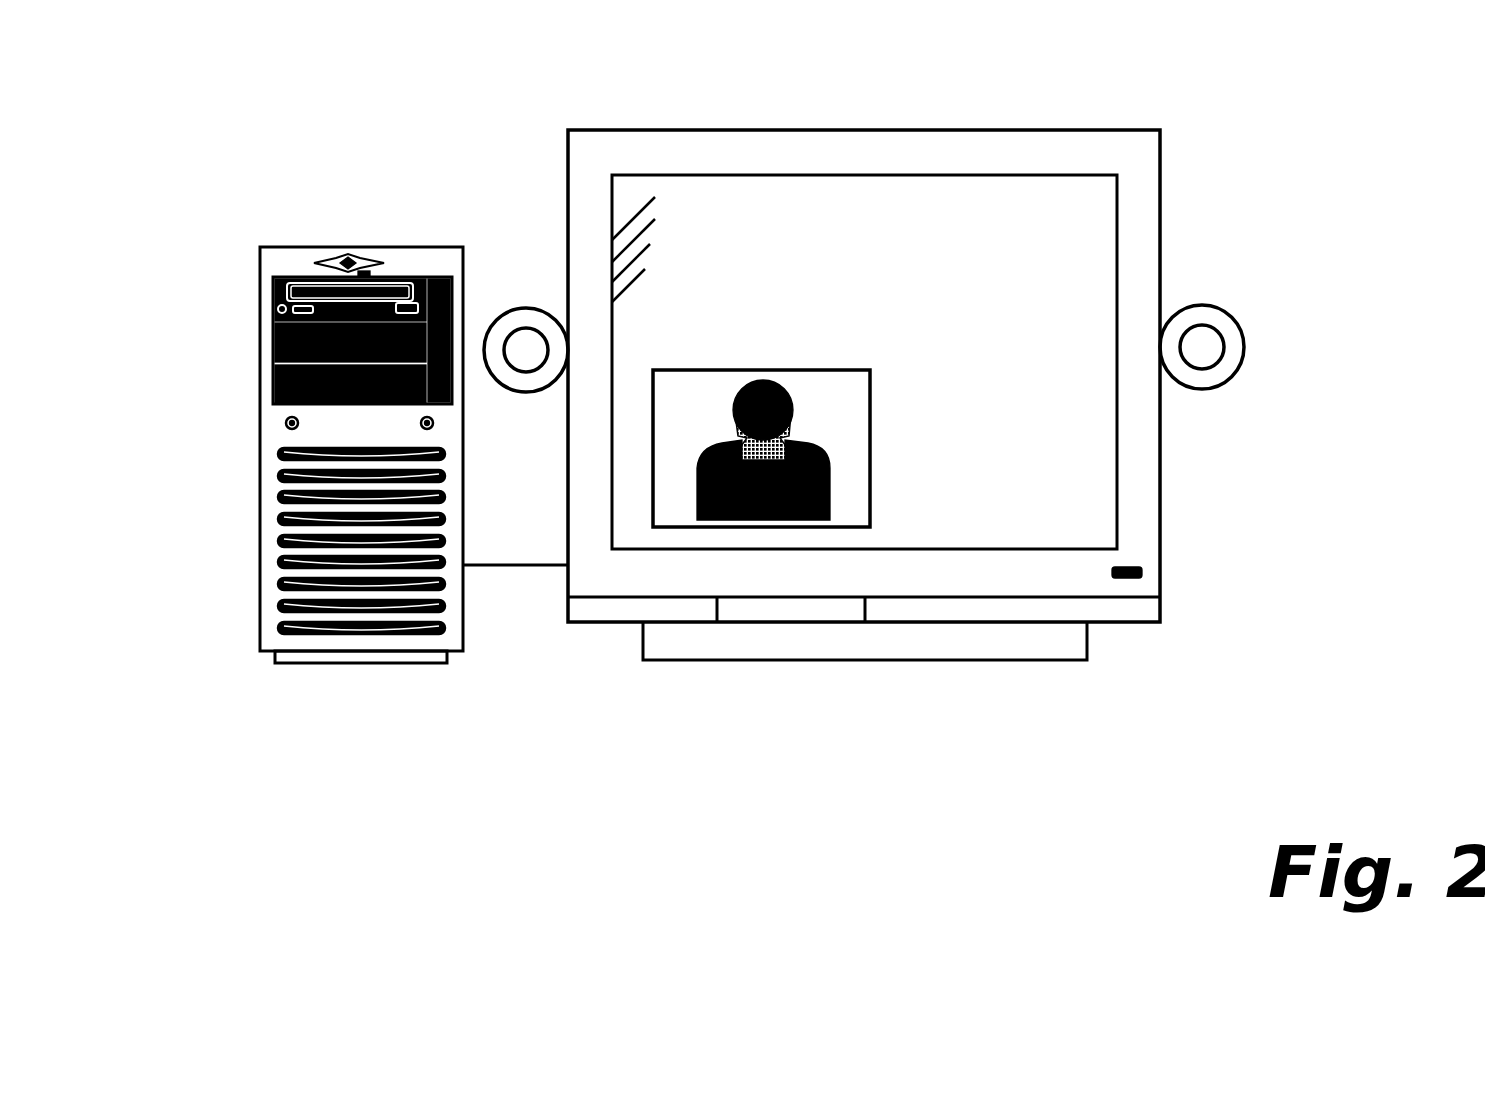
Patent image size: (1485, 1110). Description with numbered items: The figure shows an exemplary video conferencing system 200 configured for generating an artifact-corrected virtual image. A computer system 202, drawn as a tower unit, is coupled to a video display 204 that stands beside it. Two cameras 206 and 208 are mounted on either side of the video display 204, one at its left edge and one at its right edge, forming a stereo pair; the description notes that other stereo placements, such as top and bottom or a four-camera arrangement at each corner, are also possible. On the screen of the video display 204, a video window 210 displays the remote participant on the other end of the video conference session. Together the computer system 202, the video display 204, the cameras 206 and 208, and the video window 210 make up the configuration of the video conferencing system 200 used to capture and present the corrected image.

The video conferencing system 200 is at (270, 122).
The computer system 202 is at (260, 607).
The video display 204 is at (568, 622).
The camera 206 is at (512, 308).
The camera 208 is at (1200, 305).
The video window 210 is at (755, 370).